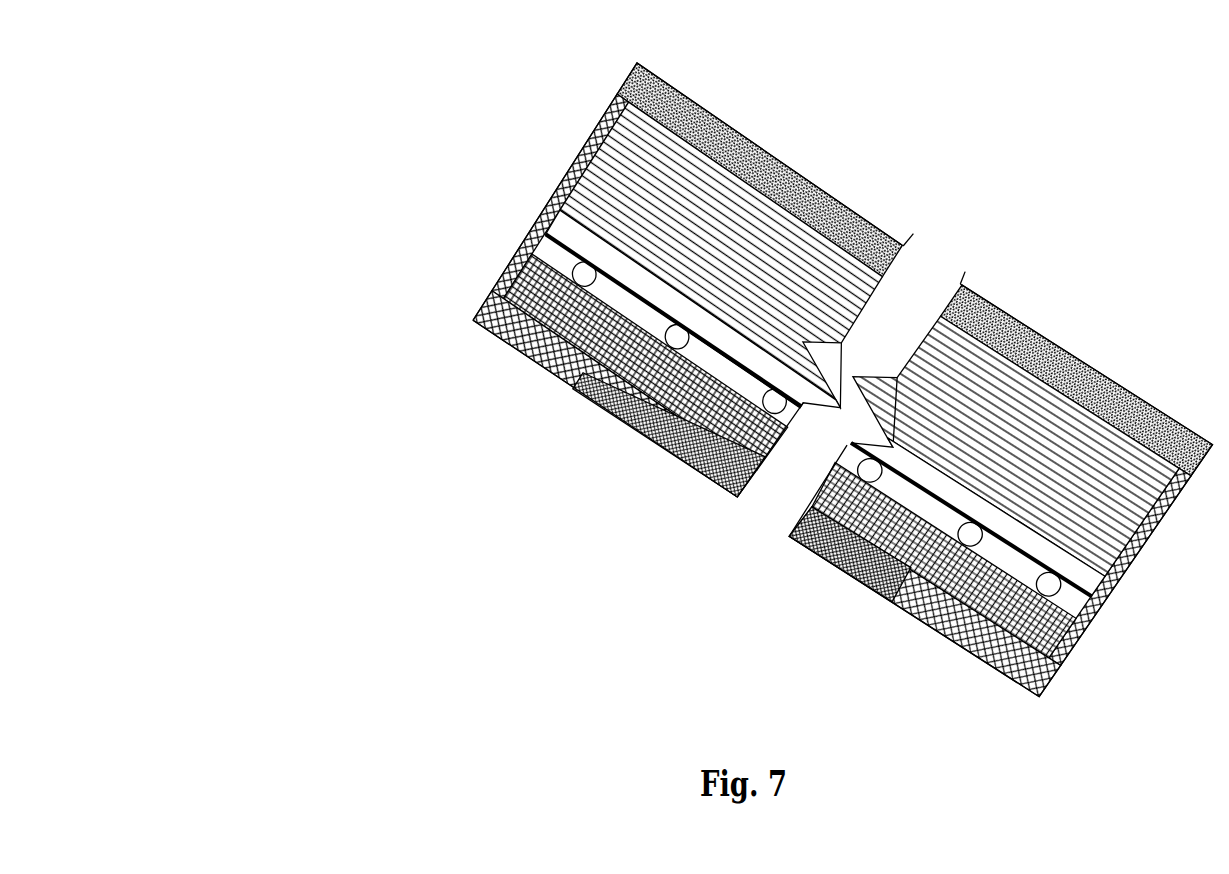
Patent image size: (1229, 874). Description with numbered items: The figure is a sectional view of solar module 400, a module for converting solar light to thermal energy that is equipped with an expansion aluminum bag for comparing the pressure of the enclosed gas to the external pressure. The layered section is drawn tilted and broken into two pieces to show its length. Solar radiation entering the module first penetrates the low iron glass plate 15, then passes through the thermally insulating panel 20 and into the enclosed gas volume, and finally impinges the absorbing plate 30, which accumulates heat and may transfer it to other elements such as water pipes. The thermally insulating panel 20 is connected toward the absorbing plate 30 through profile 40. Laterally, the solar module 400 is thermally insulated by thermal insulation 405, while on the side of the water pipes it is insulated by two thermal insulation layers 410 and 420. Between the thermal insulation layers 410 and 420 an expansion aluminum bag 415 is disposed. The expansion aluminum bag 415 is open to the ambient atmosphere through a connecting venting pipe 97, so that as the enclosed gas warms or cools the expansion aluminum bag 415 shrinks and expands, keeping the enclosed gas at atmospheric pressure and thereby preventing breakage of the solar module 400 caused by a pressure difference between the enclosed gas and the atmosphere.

The solar module 400 is at (270, 141).
The low iron glass plate 15 is at (596, 121).
The profile 40 is at (736, 160).
The thermally insulating panel 20 is at (728, 236).
The thermal insulation 405 is at (556, 212).
The absorbing plate 30 is at (566, 246).
The connecting venting pipe 97 is at (471, 293).
The expansion aluminum bag 415 is at (578, 390).
The thermal insulation layer 410 is at (797, 533).
The thermal insulation layer 420 is at (897, 610).